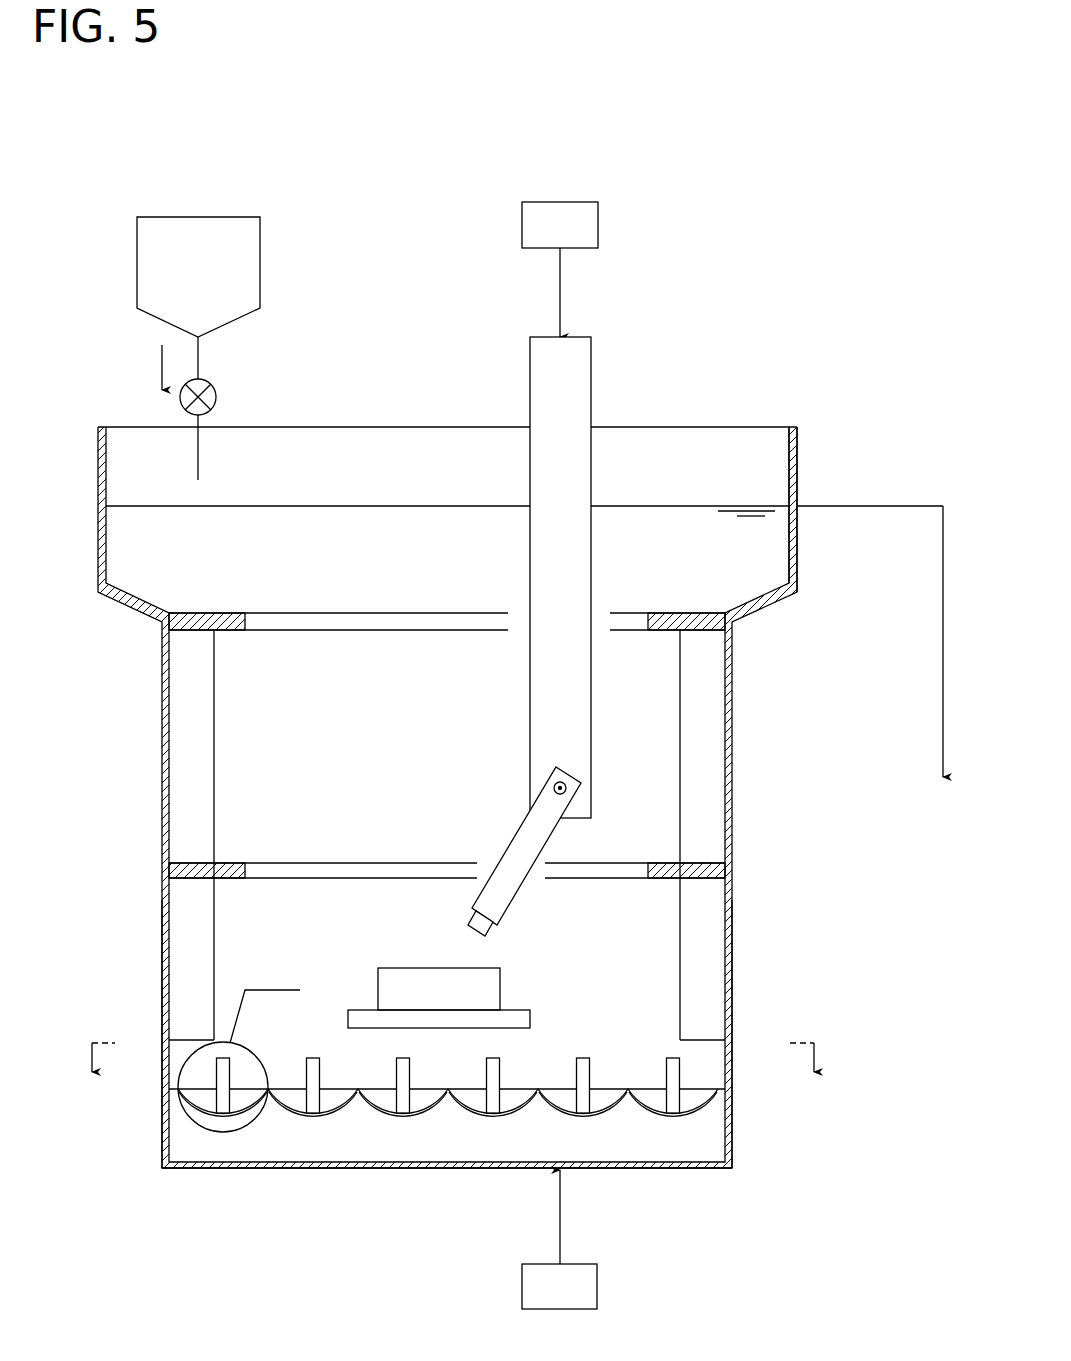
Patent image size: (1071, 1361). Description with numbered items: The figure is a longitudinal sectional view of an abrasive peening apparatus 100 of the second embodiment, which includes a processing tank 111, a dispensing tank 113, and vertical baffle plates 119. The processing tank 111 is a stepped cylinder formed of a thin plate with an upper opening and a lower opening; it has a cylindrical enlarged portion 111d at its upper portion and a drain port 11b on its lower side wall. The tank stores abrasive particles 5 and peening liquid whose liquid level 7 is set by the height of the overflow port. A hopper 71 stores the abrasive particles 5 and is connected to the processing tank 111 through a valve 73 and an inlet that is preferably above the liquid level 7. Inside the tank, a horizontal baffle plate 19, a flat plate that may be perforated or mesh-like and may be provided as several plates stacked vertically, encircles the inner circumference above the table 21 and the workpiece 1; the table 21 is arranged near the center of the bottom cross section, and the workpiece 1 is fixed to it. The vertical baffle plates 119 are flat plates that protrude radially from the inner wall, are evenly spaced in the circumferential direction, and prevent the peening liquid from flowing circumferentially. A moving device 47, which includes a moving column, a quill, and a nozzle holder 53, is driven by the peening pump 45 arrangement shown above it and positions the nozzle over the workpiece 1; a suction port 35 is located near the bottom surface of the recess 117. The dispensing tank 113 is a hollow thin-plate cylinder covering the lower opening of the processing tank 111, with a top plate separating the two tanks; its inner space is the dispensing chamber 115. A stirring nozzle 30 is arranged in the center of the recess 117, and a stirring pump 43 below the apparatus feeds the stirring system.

The abrasive peening apparatus 100 is at (947, 143).
The processing tank 111 is at (162, 760).
The enlarged portion 111d is at (797, 478).
The drain port 11b is at (733, 1040).
The dispensing tank 113 is at (733, 1118).
The dispensing chamber 115 is at (176, 1122).
The liquid level 7 is at (438, 505).
The baffle plate 19 is at (232, 613).
The vertical baffle plate 119 is at (214, 727).
The hopper 71 is at (260, 222).
The valve 73 is at (216, 390).
The abrasive particles 5 is at (160, 372).
The peening pump 45 is at (598, 218).
The moving device 47 is at (591, 357).
The nozzle holder 53 is at (512, 835).
The suction port 35 is at (470, 920).
The table 21 is at (348, 1020).
The workpiece 1 is at (378, 975).
The recess 117 is at (553, 1092).
The stirring nozzle 30 is at (592, 1068).
The stirring pump 43 is at (598, 1302).